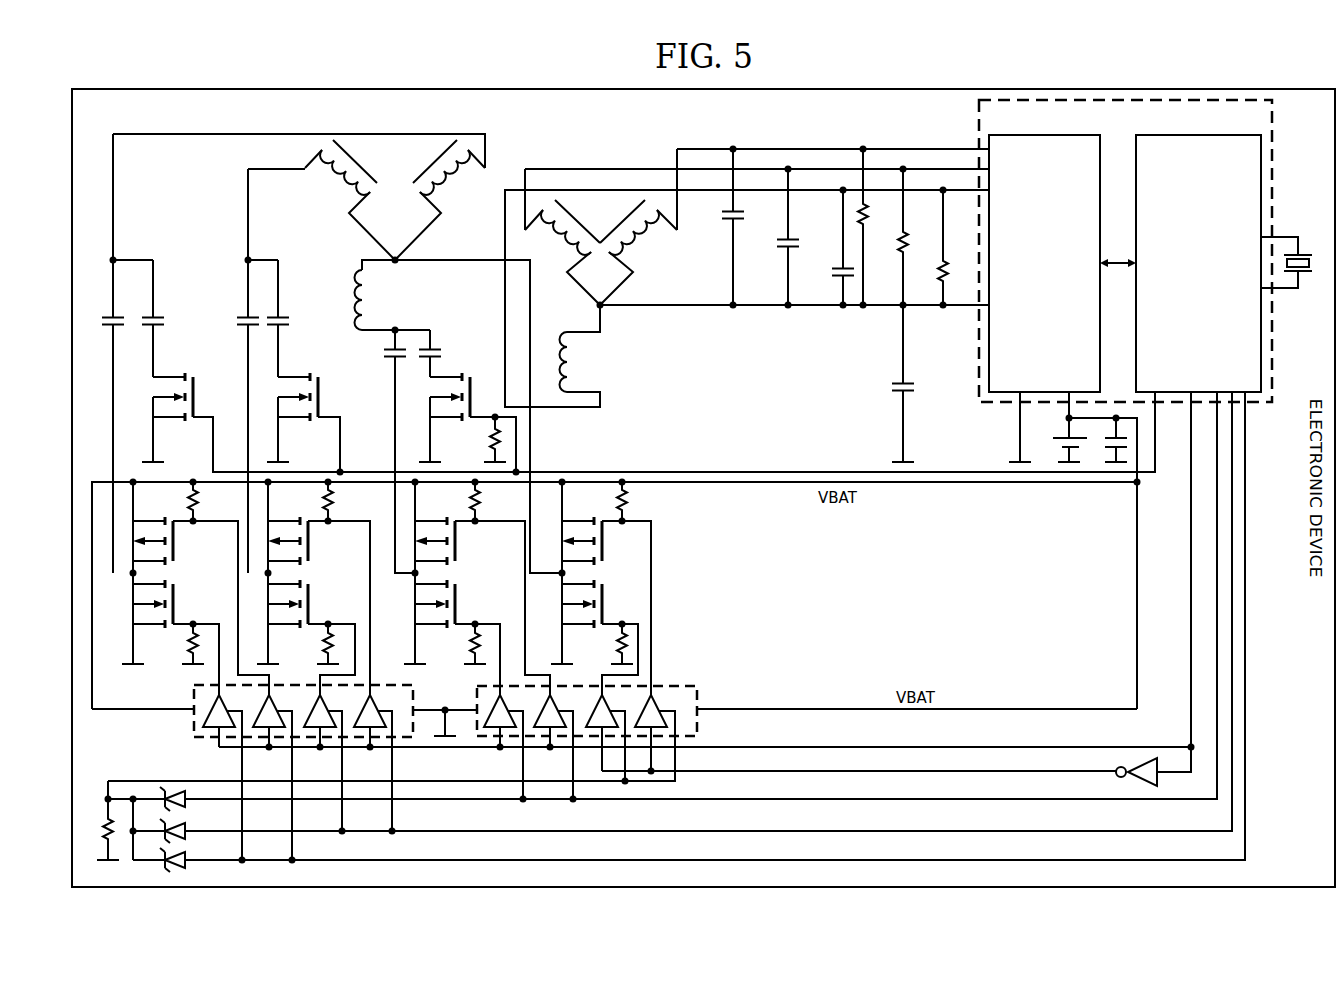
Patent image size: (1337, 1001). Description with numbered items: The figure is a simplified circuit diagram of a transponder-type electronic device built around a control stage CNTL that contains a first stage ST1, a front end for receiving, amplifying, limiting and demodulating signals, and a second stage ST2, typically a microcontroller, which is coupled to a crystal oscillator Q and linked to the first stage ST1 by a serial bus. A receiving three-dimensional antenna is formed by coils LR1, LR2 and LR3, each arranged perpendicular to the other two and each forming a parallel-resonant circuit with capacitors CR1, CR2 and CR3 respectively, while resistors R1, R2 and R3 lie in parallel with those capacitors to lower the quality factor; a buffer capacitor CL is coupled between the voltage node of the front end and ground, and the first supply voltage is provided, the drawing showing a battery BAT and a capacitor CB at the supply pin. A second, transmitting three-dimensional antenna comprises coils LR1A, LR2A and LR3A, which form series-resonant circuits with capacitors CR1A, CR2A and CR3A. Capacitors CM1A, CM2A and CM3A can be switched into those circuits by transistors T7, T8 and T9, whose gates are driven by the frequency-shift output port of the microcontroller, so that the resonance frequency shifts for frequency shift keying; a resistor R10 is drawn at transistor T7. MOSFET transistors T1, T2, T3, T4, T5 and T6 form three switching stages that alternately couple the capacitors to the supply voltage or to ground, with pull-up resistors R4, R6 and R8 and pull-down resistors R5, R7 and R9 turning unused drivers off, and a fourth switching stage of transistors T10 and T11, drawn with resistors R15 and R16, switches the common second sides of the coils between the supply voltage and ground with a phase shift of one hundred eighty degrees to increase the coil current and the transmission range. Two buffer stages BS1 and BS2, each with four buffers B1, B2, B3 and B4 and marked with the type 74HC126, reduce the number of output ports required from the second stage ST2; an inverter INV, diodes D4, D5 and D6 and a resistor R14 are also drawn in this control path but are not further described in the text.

The capacitor CR3A is at (102, 353).
The capacitor CM3A is at (164, 318).
The transistor T9 is at (161, 417).
The capacitor CR2A is at (236, 371).
The capacitor CM2A is at (290, 318).
The transistor T8 is at (286, 417).
The coil LR2A is at (348, 200).
The coil LR3A is at (440, 200).
The coil LR1A is at (349, 300).
The capacitor CR1A is at (375, 451).
The capacitor CM1A is at (454, 353).
The transistor T7 is at (438, 417).
The resistor R10 is at (480, 439).
The coil LR2 is at (562, 252).
The coil LR3 is at (638, 252).
The coil LR1 is at (553, 362).
The capacitor CR3 is at (714, 227).
The capacitor CR2 is at (769, 237).
The capacitor CR1 is at (825, 247).
The resistor R3 is at (875, 227).
The resistor R2 is at (915, 237).
The resistor R1 is at (955, 247).
The buffer capacitor CL is at (891, 383).
The control stage CNTL is at (1125, 251).
The first stage ST1 is at (1062, 263).
The second stage ST2 is at (1198, 263).
The crystal oscillator Q is at (1295, 262).
The battery BAT is at (1074, 440).
The supply bypass capacitor CB is at (1116, 440).
The transistor T5 is at (168, 527).
The transistor T6 is at (163, 618).
The pull-up resistor R8 is at (215, 588).
The pull-down resistor R9 is at (190, 659).
The transistor T3 is at (303, 527).
The transistor T4 is at (298, 618).
The pull-up resistor R6 is at (333, 588).
The pull-down resistor R7 is at (326, 659).
The transistor T1 is at (449, 527).
The transistor T2 is at (444, 618).
The pull-up resistor R4 is at (497, 588).
The pull-down resistor R5 is at (472, 659).
The transistor T10 is at (601, 527).
The transistor T11 is at (595, 618).
The resistor R15 is at (616, 588).
The resistor R16 is at (610, 659).
The quad tri-state buffer IC type 74HC126 is at (445, 674).
The buffer stage BS1 is at (283, 713).
The buffer stage BS2 is at (606, 711).
The buffer B1 is at (366, 776).
The buffer B2 is at (416, 776).
The buffer B3 is at (467, 762).
The buffer B4 is at (517, 762).
The inverter INV is at (1154, 777).
The zener diode D4 is at (192, 804).
The zener diode D5 is at (192, 835).
The zener diode D6 is at (192, 865).
The resistor R14 is at (102, 829).